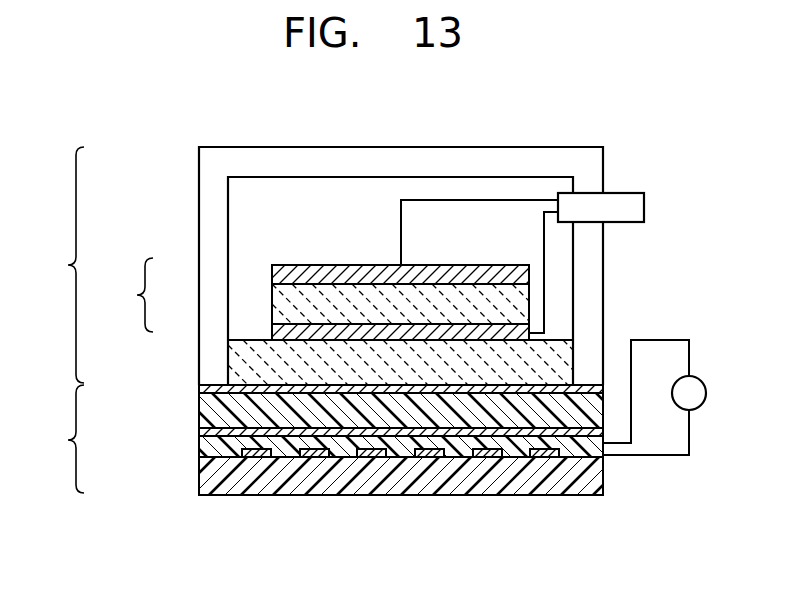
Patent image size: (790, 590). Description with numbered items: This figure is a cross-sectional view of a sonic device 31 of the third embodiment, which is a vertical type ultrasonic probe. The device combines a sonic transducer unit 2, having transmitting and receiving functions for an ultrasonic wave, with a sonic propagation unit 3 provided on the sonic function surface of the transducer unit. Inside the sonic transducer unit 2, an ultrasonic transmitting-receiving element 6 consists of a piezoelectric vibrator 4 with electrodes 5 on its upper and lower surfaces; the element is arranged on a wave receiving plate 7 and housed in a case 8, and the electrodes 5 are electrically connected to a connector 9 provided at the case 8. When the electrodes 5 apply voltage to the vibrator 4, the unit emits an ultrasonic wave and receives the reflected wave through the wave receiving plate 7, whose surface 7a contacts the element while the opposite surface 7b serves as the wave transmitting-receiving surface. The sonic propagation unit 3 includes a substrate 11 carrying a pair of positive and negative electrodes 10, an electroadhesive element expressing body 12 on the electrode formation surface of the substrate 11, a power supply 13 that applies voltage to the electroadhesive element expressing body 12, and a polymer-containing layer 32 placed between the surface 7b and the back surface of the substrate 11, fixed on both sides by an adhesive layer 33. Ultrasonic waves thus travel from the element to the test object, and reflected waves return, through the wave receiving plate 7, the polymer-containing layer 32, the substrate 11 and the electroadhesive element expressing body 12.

The sonic device 31 is at (575, 104).
The case 8 is at (312, 147).
The sonic transducer unit 2 is at (64, 265).
The sonic propagation unit 3 is at (63, 439).
The ultrasonic transmitting-receiving element 6 is at (132, 295).
The wave receiving plate 7 is at (250, 370).
The surface in contact with the ultrasonic transmitting-receiving element 7a is at (557, 337).
The wave transmitting-receiving surface 7b is at (558, 385).
The electrodes 5 is at (272, 272).
The vibrator 4 is at (272, 302).
The connector 9 is at (630, 193).
The adhesive layer 33 is at (403, 393).
The polymer-containing layer 32 is at (458, 410).
The substrate 11 is at (232, 448).
The electrodes 10 is at (255, 452).
The electroadhesive element expressing body 12 is at (332, 478).
The power supply 13 is at (697, 377).